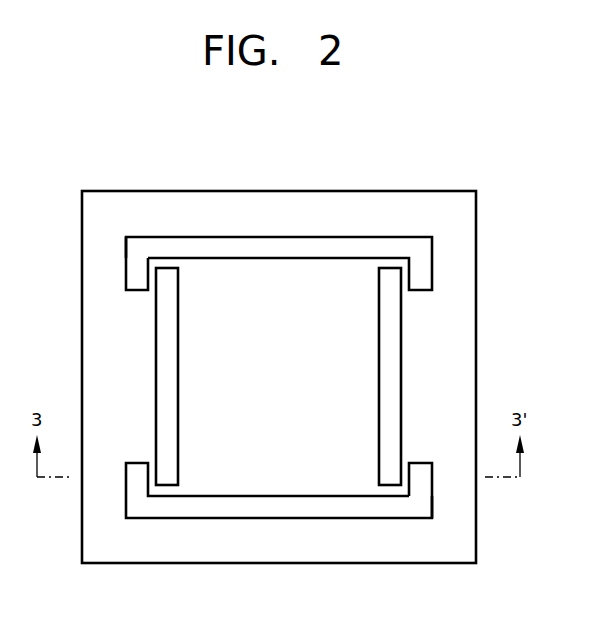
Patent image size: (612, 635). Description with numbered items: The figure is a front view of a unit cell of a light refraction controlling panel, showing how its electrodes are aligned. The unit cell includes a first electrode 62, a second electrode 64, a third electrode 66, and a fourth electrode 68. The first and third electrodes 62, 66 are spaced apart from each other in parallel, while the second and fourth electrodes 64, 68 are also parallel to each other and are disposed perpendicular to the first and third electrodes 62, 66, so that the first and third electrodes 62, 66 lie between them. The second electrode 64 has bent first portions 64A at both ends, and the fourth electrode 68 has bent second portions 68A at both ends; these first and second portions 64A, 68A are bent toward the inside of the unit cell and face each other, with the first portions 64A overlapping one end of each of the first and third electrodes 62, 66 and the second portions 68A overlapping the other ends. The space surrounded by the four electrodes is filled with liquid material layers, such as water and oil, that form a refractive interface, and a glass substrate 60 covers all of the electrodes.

The glass substrate 60 is at (371, 205).
The first electrode 62 is at (175, 302).
The second electrode 64 is at (270, 520).
The first portions 64A is at (425, 485).
The third electrode 66 is at (385, 413).
The fourth electrode 68 is at (258, 240).
The second portions 68A is at (130, 270).